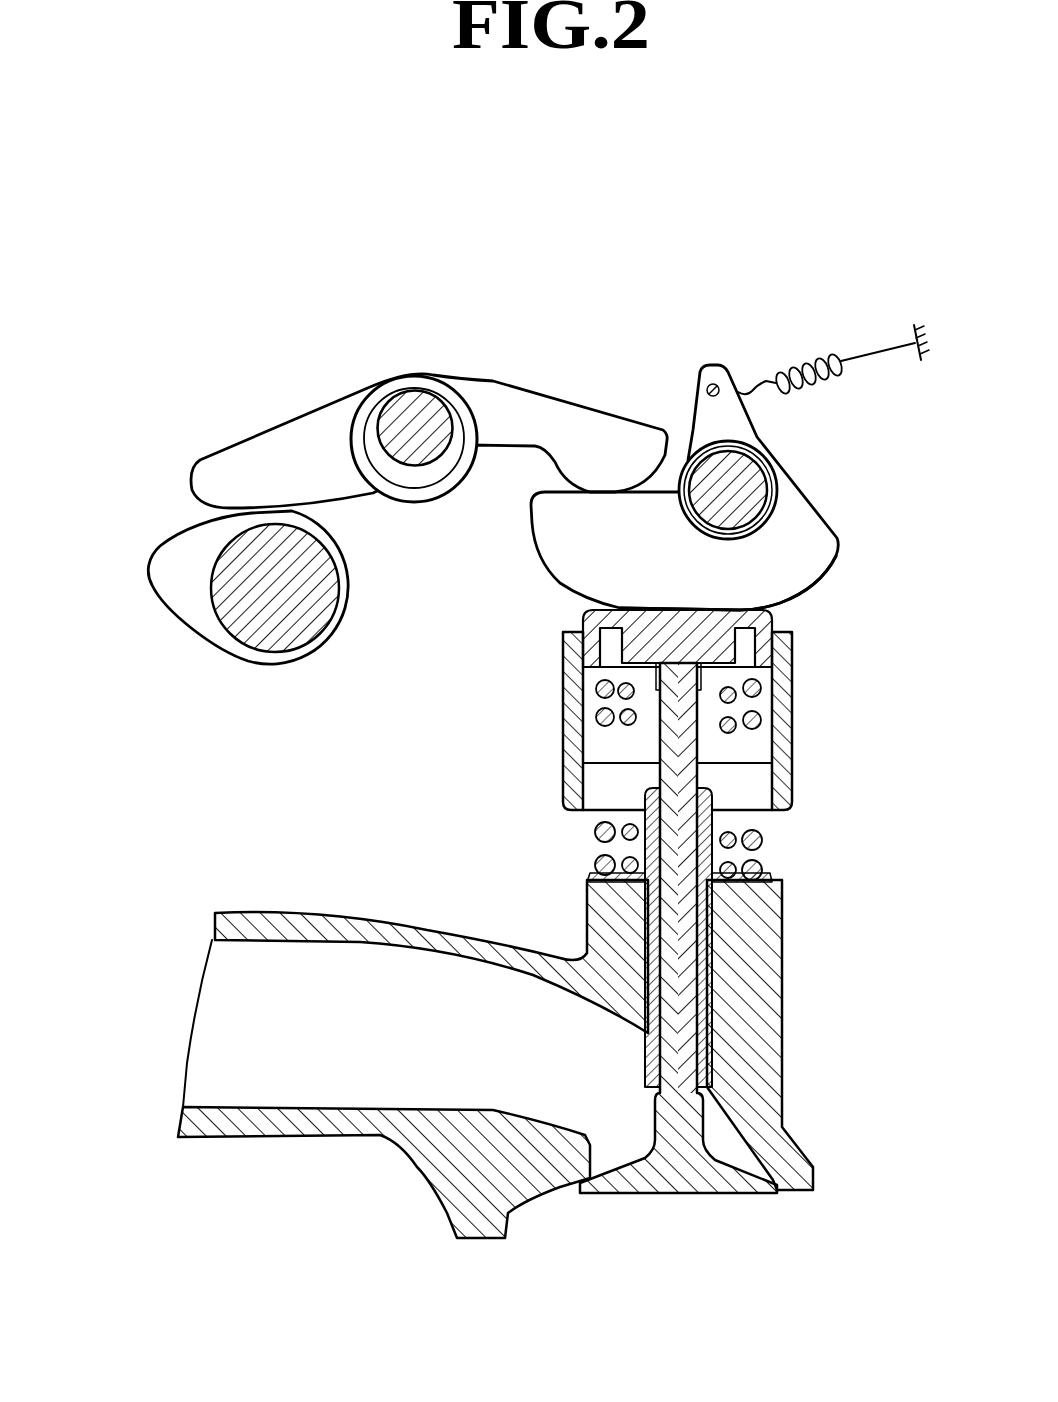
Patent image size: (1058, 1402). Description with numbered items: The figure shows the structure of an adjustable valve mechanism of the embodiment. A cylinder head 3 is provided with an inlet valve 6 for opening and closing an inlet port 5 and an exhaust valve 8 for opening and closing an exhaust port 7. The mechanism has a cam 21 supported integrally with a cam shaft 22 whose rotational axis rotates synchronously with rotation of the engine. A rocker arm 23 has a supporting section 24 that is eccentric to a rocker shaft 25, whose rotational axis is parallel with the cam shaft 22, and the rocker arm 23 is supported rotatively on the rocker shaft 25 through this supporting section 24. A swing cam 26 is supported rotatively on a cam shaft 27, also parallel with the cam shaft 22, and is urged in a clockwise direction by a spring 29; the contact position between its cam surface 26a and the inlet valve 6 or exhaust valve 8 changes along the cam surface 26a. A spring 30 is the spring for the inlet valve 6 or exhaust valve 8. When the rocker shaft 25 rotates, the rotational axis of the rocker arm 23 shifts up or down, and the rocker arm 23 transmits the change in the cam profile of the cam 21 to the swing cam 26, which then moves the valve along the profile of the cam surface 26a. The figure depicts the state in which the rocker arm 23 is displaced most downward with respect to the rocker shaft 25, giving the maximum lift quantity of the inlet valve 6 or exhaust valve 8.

The cylinder head 3 is at (415, 1160).
The inlet port 5 is at (143, 1046).
The exhaust port 7 is at (224, 1110).
The inlet valve 6 is at (678, 965).
The exhaust valve 8 is at (670, 1188).
The cam 21 is at (178, 592).
The cam shaft 22 is at (280, 640).
The rocker arm 23 is at (505, 397).
The supporting section 24 is at (407, 488).
The rocker shaft 25 is at (383, 437).
The swing cam 26 is at (815, 532).
The cam surface 26a is at (803, 587).
The cam shaft 27 is at (753, 482).
The spring 29 is at (808, 362).
The spring 30 is at (763, 842).